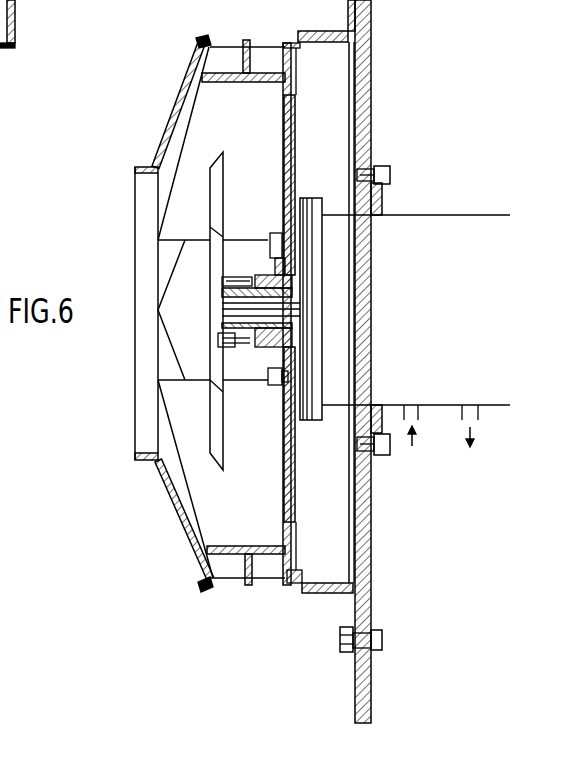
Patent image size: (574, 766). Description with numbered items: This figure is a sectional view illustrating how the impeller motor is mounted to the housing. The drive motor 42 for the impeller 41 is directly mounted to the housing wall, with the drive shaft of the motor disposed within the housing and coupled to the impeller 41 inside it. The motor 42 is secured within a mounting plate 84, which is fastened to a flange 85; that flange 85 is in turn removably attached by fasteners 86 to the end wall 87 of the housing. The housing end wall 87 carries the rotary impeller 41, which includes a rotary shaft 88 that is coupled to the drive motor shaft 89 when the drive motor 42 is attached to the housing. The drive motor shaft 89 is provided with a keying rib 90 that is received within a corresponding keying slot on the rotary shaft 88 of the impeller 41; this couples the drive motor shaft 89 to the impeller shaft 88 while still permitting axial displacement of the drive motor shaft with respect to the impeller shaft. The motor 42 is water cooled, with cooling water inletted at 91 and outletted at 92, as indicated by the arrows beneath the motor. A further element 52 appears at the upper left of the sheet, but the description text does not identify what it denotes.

The impeller 41 is at (226, 72).
The drive motor 42 is at (442, 214).
The pipe stub 52 is at (15, 17).
The mounting plate 84 is at (390, 201).
The flange 85 is at (372, 85).
The fasteners 86 is at (383, 633).
The end wall 87 is at (352, 610).
The rotary shaft 88 is at (262, 277).
The drive motor shaft 89 is at (298, 320).
The keying rib 90 is at (300, 303).
The water inlet 91 is at (421, 427).
The water outlet 92 is at (482, 427).